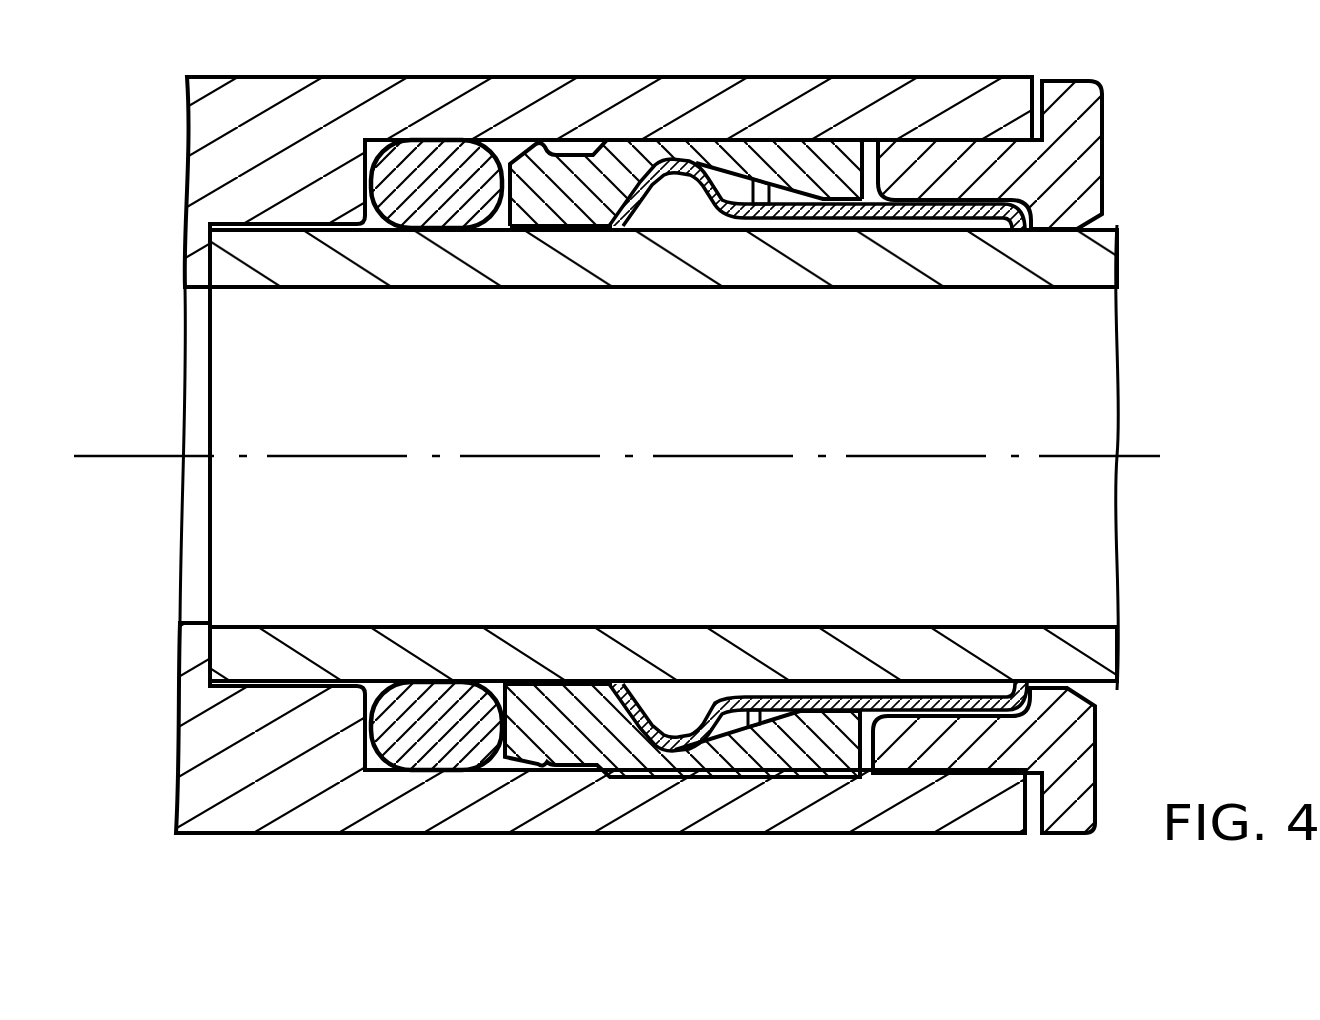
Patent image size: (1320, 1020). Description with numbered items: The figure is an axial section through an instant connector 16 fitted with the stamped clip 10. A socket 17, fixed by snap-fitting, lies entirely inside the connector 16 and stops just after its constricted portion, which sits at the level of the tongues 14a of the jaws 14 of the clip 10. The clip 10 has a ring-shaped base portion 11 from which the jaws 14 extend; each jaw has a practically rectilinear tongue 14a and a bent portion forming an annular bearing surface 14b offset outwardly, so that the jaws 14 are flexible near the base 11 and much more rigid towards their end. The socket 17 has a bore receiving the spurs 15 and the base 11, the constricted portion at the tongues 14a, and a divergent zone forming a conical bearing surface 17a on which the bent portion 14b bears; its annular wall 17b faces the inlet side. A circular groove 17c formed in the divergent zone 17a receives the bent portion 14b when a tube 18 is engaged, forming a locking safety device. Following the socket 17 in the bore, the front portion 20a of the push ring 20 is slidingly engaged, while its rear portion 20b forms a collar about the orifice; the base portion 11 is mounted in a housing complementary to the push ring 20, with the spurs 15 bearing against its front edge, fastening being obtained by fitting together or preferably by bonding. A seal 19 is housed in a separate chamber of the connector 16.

The clip 10 is at (820, 697).
The base portion 11 is at (983, 220).
The jaws 14 is at (643, 703).
The tongue 14a is at (815, 212).
The annular bearing surface 14b is at (668, 180).
The spurs 15 is at (868, 140).
The connector 16 is at (197, 182).
The socket 17 is at (760, 763).
The conical bearing surface 17a is at (700, 170).
The wall 17b is at (600, 228).
The circular groove 17c is at (767, 190).
The shaft 18 is at (1092, 340).
The seal 19 is at (418, 233).
The push ring 20 is at (1083, 750).
The front portion 20a is at (950, 162).
The rear portion 20b is at (1090, 115).